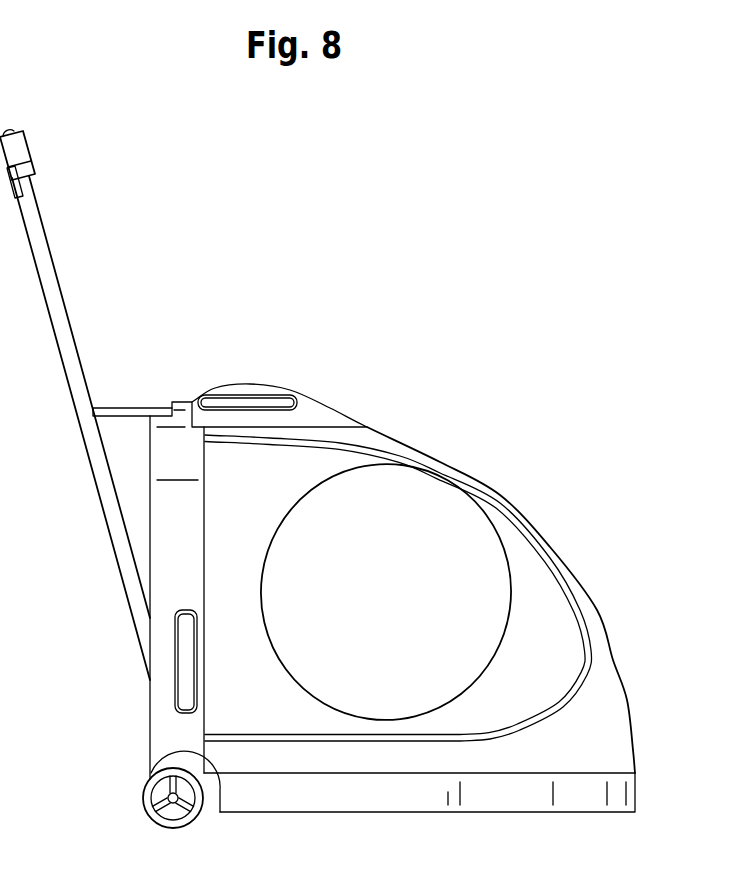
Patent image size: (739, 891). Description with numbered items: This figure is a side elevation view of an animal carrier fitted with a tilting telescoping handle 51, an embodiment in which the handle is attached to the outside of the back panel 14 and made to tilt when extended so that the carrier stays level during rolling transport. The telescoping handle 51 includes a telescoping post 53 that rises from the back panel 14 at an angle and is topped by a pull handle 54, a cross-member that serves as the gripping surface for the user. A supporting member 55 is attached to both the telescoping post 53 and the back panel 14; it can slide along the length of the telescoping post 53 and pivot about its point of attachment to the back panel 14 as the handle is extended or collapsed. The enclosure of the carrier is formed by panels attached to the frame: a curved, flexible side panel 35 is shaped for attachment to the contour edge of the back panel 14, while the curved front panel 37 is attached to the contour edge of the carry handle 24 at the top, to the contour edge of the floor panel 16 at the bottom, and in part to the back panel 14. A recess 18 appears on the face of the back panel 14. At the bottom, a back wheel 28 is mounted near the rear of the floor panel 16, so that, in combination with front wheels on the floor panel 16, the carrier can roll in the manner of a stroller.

The telescoping handle 51 is at (92, 206).
The telescoping post 53 is at (60, 305).
The pull handle 54 is at (27, 147).
The supporting member 55 is at (115, 411).
The carry handle 24 is at (336, 391).
The front panel 37 is at (394, 447).
The side panel 35 is at (527, 550).
The latch recess 18 is at (185, 645).
The back panel 14 is at (167, 725).
The back wheel 28 is at (160, 822).
The floor panel 16 is at (433, 805).